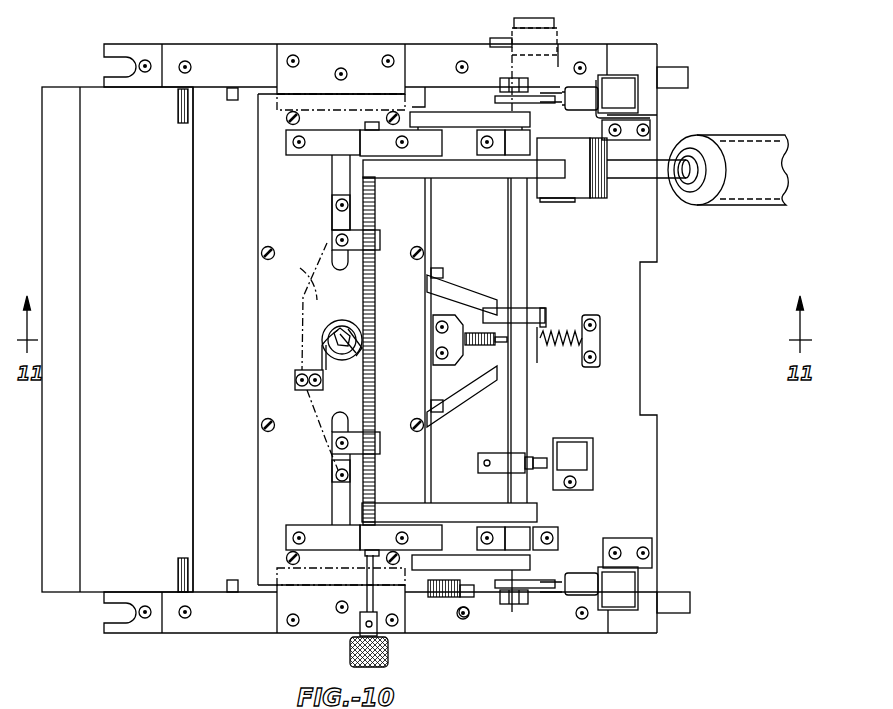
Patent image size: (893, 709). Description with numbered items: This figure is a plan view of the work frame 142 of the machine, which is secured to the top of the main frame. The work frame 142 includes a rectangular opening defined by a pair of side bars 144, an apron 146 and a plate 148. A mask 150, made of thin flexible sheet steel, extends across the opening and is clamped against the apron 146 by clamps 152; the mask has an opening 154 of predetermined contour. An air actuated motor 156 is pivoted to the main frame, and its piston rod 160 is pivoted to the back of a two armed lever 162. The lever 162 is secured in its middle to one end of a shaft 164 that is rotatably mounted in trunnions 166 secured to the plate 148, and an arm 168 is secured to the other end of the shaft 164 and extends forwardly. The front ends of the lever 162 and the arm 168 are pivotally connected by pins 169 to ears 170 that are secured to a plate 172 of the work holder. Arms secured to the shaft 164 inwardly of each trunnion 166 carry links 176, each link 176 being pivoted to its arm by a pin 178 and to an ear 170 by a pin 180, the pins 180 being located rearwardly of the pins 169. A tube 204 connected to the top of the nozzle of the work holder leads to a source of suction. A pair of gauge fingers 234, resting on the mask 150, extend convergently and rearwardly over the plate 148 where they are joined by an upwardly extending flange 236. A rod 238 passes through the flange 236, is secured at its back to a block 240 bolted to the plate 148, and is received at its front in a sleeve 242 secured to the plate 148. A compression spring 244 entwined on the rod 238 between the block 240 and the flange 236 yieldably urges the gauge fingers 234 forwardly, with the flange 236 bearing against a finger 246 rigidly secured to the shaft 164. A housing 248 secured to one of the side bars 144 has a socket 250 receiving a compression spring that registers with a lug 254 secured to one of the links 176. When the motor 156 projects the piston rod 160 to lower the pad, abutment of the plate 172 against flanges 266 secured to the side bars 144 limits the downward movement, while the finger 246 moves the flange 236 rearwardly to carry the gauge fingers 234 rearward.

The work frame 142 is at (208, 36).
The side bars 144 is at (245, 53).
The apron 146 is at (146, 298).
The plate 148 is at (611, 414).
The mask 150 is at (233, 393).
The clamps 152 is at (202, 92).
The mask opening 154 is at (306, 356).
The air actuated motor 156 is at (757, 150).
The piston rod 160 is at (638, 172).
The two armed lever 162 is at (449, 170).
The shaft 164 is at (520, 221).
The trunnions 166 is at (529, 140).
The arm 168 is at (483, 508).
The pins 169 is at (378, 183).
The ears 170 is at (322, 147).
The plate 172 is at (296, 467).
The links 176 is at (479, 117).
The pin 178 is at (527, 94).
The pin 180 is at (434, 524).
The tube 204 is at (362, 348).
The gauge fingers 234 is at (468, 297).
The flange 236 is at (548, 330).
The rod 238 is at (508, 325).
The block 240 is at (594, 337).
The sleeve 242 is at (483, 347).
The compression spring 244 is at (570, 347).
The finger 246 is at (544, 357).
The housing 248 is at (483, 587).
The socket 250 is at (458, 601).
The lug 254 is at (442, 594).
The flanges 266 is at (378, 107).